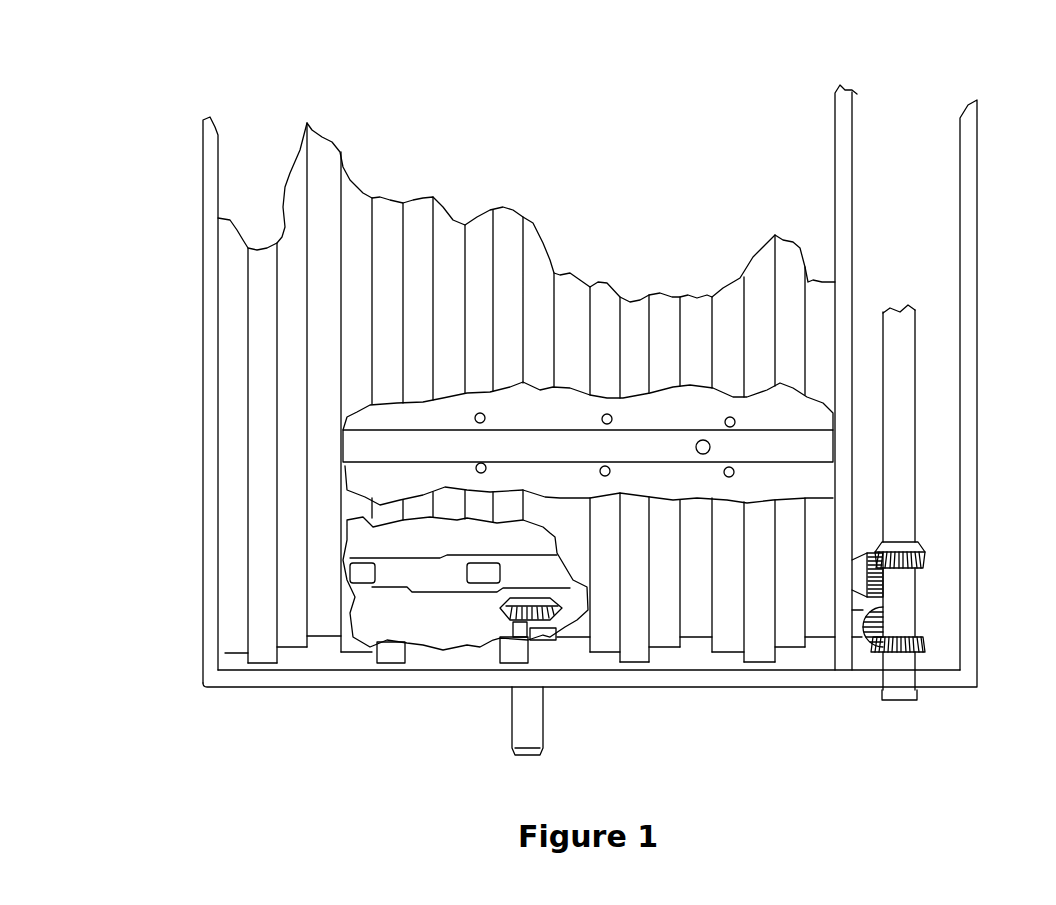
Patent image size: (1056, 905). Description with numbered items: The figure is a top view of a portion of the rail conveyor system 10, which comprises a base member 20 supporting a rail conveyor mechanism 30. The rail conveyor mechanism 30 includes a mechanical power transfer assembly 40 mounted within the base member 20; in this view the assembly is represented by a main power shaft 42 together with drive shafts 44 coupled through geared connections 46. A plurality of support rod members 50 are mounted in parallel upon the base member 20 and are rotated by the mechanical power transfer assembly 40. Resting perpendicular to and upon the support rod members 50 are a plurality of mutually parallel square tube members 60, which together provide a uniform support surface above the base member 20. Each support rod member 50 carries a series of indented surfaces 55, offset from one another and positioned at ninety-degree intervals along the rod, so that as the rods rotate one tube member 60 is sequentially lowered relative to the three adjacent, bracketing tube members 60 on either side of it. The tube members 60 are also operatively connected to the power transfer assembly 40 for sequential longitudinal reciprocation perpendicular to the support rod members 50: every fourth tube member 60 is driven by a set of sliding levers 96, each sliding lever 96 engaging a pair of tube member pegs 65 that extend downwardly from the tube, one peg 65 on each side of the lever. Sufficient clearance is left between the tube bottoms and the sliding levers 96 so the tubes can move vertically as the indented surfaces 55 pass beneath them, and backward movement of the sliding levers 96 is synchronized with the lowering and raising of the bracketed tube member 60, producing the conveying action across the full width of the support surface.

The rail conveyor system 10 is at (258, 758).
The base member 20 is at (213, 505).
The rail conveyor mechanism 30 is at (588, 190).
The mechanical power transfer assembly 40 is at (573, 697).
The main power shaft 42 is at (523, 720).
The drive shafts 44 is at (915, 348).
The geared connections 46 is at (925, 568).
The support rod members 50 is at (417, 572).
The indented surfaces of rod members 55 is at (360, 560).
The square tube members 60 is at (320, 157).
The tube member pegs 65 is at (486, 417).
The sliding levers 96 is at (552, 452).